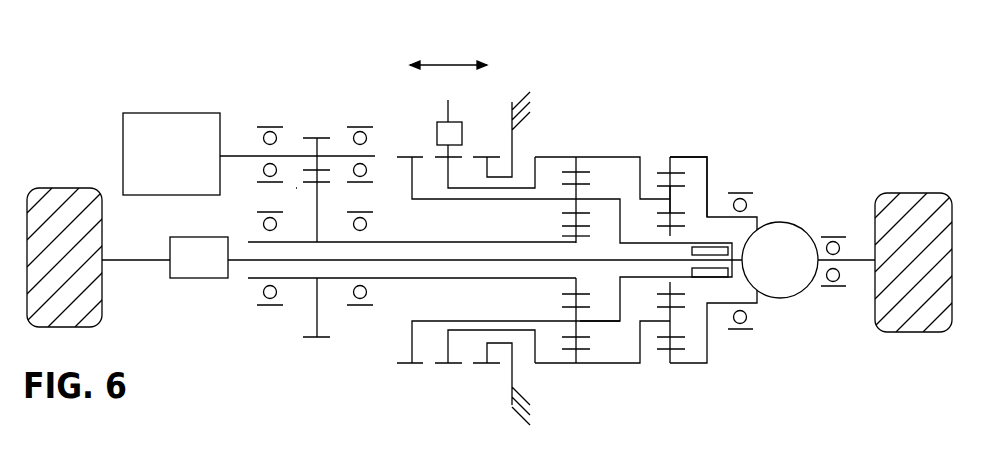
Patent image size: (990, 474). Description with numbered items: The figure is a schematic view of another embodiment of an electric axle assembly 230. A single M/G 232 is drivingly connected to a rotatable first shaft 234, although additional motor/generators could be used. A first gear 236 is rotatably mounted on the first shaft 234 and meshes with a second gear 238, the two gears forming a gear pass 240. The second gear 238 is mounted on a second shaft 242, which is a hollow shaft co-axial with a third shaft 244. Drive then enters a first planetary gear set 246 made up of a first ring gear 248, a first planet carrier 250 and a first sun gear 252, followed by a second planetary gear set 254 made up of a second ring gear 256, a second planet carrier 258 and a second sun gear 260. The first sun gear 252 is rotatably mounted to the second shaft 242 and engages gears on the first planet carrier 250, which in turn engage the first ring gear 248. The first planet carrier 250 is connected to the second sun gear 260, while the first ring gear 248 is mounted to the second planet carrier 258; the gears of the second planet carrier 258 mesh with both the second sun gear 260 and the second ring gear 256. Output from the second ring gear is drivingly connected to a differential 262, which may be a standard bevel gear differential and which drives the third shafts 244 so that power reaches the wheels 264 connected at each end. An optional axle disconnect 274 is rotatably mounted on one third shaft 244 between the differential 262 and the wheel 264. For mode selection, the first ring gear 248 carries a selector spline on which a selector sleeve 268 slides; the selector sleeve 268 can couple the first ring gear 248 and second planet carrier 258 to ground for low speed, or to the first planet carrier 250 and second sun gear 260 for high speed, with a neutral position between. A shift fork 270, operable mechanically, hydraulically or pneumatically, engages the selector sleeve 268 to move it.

The electric axle assembly 230 is at (299, 71).
The M/G 232 is at (172, 113).
The first shaft 234 is at (238, 155).
The first gear 236 is at (317, 138).
The second gear 238 is at (317, 338).
The gear pass 240 is at (290, 191).
The second shaft 242 is at (255, 279).
The third shaft 244 is at (242, 262).
The first planetary gear set 246 is at (625, 152).
The first ring gear 248 is at (576, 157).
The first planet carrier 250 is at (603, 323).
The first sun gear 252 is at (574, 240).
The second planetary gear set 254 is at (713, 146).
The second ring gear 256 is at (682, 156).
The second planet carrier 258 is at (672, 195).
The second sun gear 260 is at (442, 172).
The differential 262 is at (795, 223).
The wheels 264 is at (67, 188).
The selector sleeve 268 is at (462, 130).
The shift fork 270 is at (448, 102).
The axle disconnect 274 is at (188, 282).